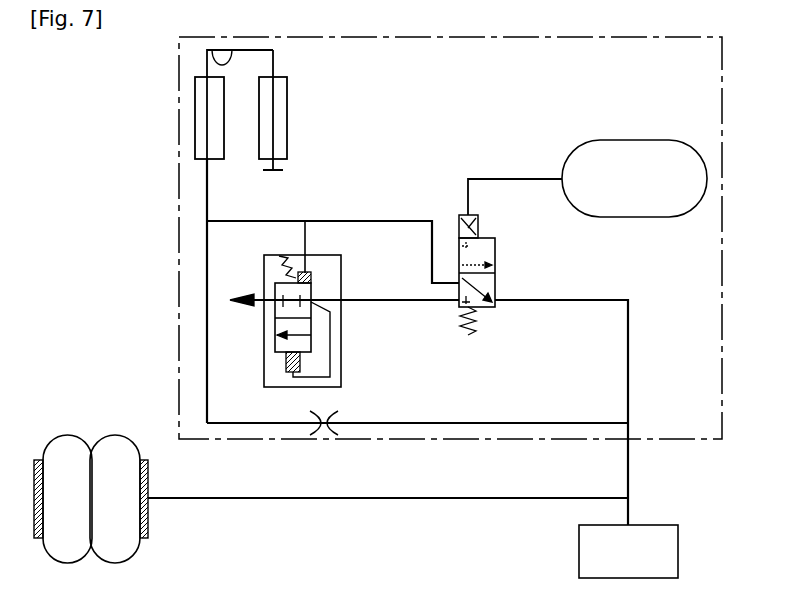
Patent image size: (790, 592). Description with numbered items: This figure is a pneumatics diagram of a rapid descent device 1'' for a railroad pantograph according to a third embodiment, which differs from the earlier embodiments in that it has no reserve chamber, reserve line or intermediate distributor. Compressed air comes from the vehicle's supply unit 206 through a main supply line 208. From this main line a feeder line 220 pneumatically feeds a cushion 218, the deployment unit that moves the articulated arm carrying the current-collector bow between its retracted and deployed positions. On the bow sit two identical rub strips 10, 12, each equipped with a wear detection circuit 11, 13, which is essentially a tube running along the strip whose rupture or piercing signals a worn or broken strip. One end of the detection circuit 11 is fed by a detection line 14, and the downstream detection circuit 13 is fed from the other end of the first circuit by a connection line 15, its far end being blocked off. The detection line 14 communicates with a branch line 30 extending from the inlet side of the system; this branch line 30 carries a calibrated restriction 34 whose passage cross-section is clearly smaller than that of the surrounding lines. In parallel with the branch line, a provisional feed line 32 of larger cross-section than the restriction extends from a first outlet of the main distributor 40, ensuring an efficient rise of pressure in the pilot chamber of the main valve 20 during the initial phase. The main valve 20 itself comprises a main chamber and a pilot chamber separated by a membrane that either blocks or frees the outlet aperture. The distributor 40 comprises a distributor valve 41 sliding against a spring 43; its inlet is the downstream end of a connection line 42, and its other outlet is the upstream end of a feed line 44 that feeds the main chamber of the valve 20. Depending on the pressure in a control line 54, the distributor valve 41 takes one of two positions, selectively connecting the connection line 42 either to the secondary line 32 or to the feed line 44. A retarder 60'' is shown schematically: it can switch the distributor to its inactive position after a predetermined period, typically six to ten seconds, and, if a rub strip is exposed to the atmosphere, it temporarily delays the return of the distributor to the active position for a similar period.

The device 1'' is at (397, 238).
The rub strip 10 is at (241, 108).
The wear detection circuit 11 is at (196, 106).
The rub strip 12 is at (285, 128).
The wear detection circuit 13 is at (280, 97).
The detection line 14 is at (207, 180).
The connection line 15 is at (210, 64).
The main valve 20 is at (366, 365).
The branch line 30 is at (432, 424).
The provisional feed line 32 is at (377, 220).
The restriction 34 is at (318, 432).
The main distributor 40 is at (530, 285).
The distributor valve 41 is at (496, 248).
The connection line 42 is at (572, 303).
The spring 43 is at (465, 335).
The feed line 44 is at (380, 303).
The control line 54 is at (500, 179).
The retarder 60'' is at (634, 178).
The supply unit 206 is at (628, 551).
The supply line 208 is at (630, 513).
The cushion 218 is at (138, 555).
The feeder line 220 is at (355, 500).